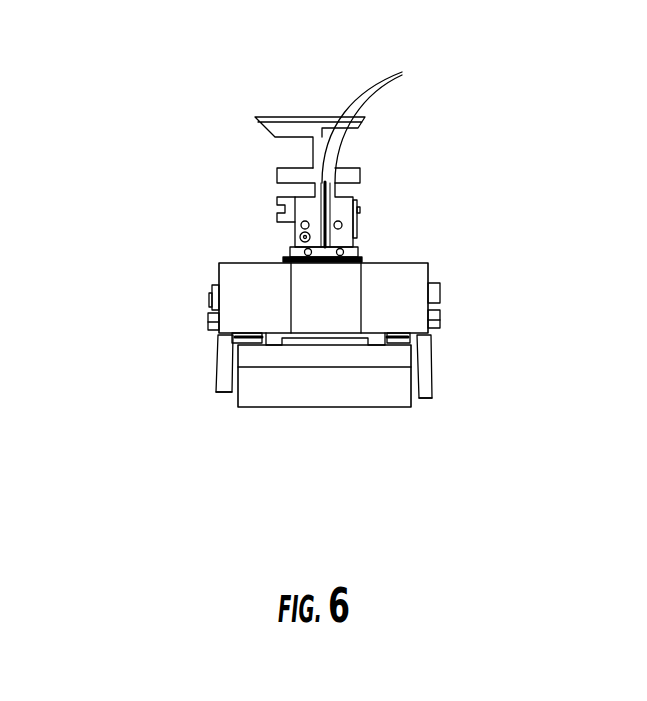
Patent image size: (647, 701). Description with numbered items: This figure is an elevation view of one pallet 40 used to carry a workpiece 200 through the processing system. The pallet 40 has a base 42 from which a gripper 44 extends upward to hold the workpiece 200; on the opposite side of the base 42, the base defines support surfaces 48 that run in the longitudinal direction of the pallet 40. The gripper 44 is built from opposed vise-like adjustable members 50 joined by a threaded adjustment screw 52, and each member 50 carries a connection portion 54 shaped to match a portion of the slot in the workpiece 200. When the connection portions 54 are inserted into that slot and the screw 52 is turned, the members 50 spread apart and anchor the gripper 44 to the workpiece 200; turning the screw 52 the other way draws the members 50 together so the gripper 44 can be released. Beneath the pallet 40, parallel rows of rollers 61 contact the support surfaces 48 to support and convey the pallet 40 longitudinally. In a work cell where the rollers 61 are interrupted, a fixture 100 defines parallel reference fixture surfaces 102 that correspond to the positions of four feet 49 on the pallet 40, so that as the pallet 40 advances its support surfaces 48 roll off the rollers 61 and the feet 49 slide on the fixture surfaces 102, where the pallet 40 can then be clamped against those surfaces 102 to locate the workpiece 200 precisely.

The pallet 40 is at (467, 147).
The workpiece 200 is at (256, 117).
The connection portion 54 is at (378, 155).
The threaded adjustment screw 52 is at (292, 196).
The adjustable member 50 is at (302, 214).
The gripper 44 is at (290, 243).
The base 42 is at (425, 306).
The reference fixture surface 102 is at (254, 348).
The foot 49 is at (250, 345).
The fixture 100 is at (290, 348).
The roller 61 is at (222, 393).
The support surface 48 is at (227, 392).